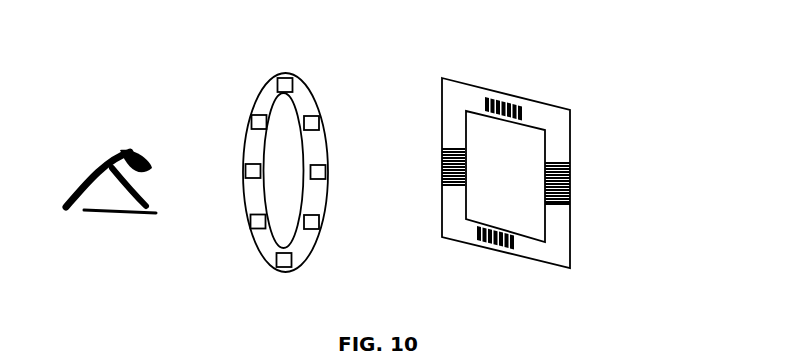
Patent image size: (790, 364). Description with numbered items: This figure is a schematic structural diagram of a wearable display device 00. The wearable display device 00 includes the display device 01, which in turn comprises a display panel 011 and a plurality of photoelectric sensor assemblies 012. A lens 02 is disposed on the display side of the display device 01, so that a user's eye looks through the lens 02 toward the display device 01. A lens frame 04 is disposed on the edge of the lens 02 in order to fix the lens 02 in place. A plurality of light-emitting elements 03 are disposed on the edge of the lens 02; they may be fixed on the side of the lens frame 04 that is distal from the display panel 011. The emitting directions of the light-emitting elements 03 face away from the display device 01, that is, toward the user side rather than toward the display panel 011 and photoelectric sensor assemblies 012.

The wearable display device 00 is at (143, 75).
The display device 01 is at (642, 143).
The display panel 011 is at (570, 143).
The photoelectric sensor assemblies 012 is at (570, 178).
The lens 02 is at (282, 213).
The light-emitting elements 03 is at (255, 218).
The lens frame 04 is at (308, 232).